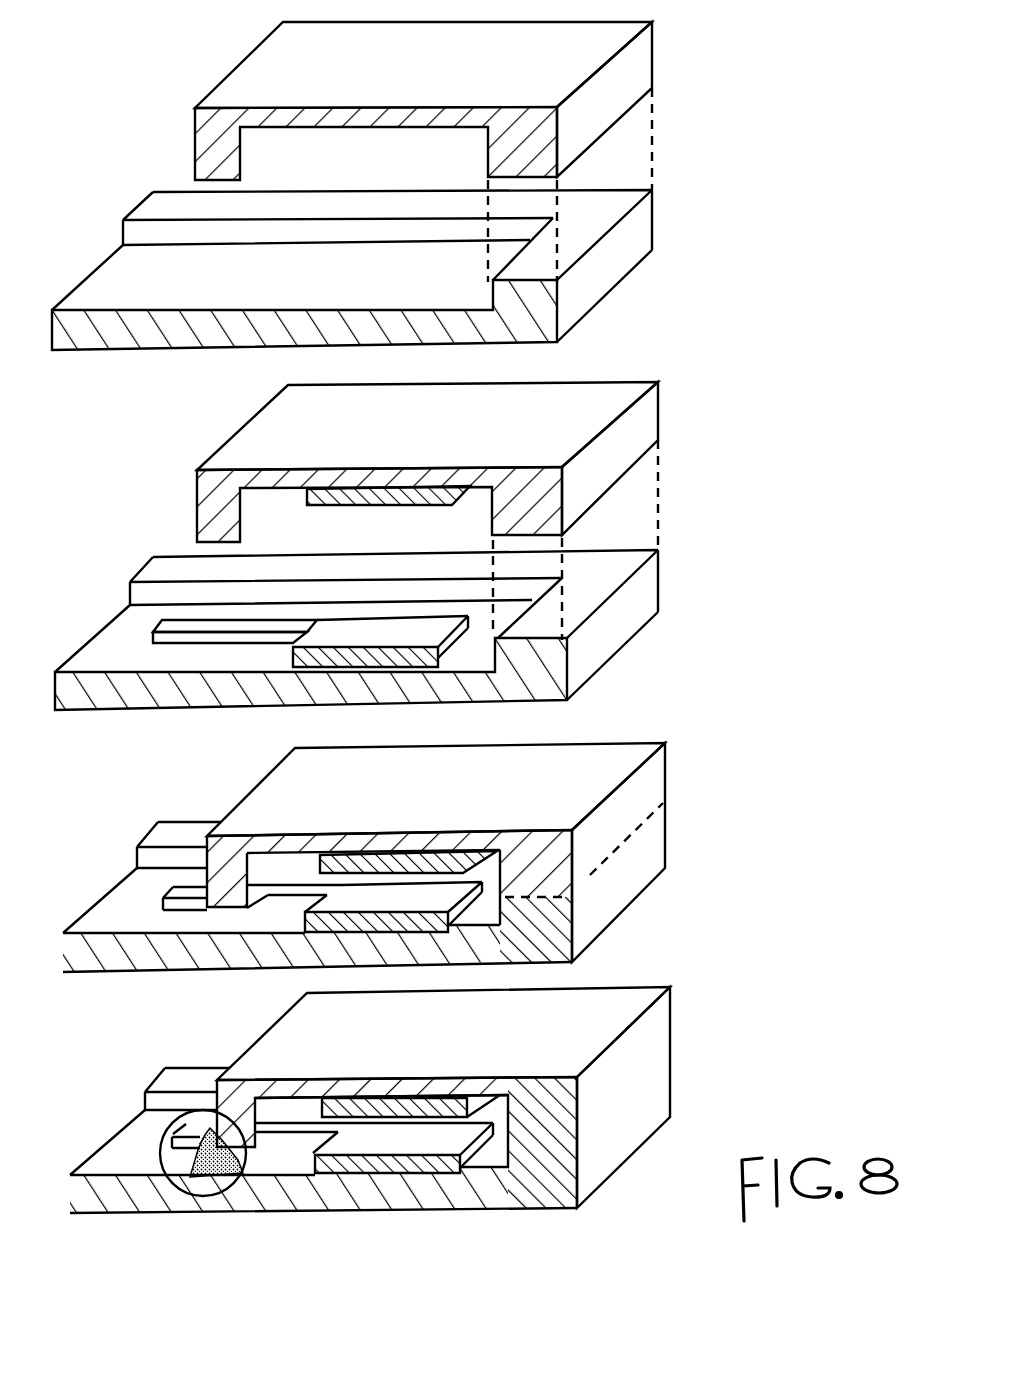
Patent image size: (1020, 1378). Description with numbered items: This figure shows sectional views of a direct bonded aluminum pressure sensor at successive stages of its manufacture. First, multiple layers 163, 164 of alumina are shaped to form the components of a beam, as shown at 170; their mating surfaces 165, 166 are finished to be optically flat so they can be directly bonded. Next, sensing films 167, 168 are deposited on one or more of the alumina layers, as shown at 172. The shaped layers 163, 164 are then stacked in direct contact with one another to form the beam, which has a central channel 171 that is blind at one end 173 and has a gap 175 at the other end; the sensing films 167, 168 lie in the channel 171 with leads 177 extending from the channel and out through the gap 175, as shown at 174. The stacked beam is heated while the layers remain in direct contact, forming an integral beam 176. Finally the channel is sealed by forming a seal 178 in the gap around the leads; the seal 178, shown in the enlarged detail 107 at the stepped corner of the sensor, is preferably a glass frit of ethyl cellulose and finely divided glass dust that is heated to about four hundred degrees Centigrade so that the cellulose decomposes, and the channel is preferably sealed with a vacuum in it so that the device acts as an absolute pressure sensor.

The layer 163 is at (195, 131).
The layer 164 is at (123, 245).
The mating surface 165 is at (628, 125).
The mating surface 166 is at (573, 248).
The sensing film 167 is at (412, 510).
The sensing film 168 is at (437, 632).
The beam components 170 is at (682, 170).
The central channel 171 is at (307, 877).
The sensing film deposition 172 is at (350, 636).
The blind end 173 is at (625, 909).
The stacked layers 174 is at (695, 809).
The gap 175 is at (218, 920).
The integral beam 176 is at (658, 1041).
The leads 177 is at (128, 618).
The seal 178 is at (178, 1163).
The seal detail 107 is at (212, 1200).